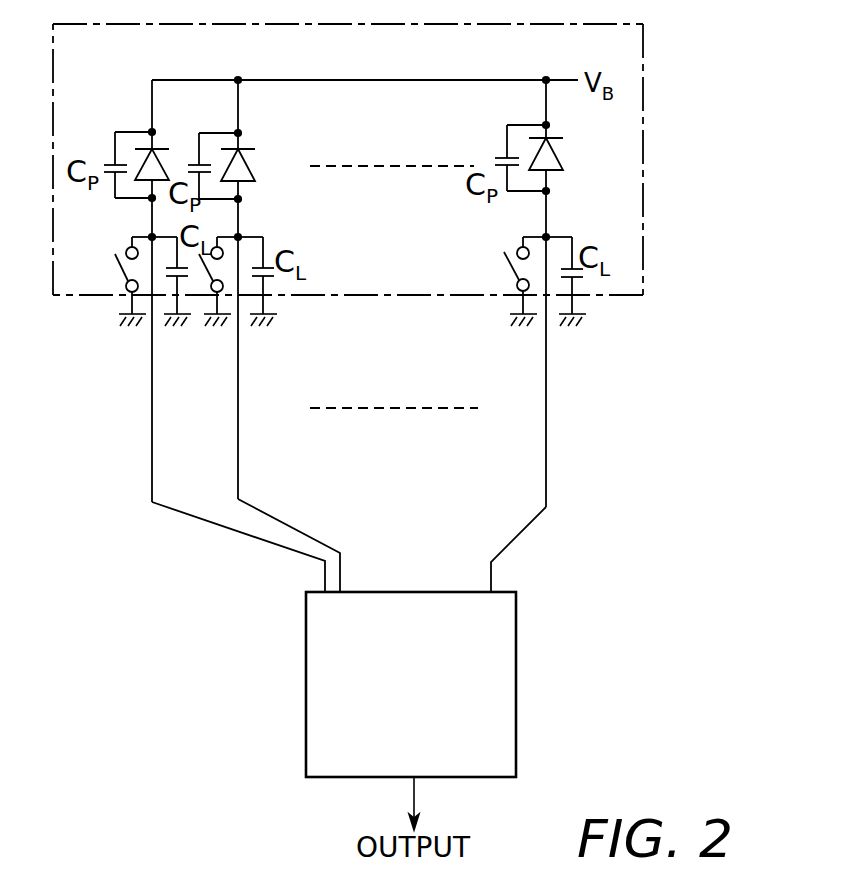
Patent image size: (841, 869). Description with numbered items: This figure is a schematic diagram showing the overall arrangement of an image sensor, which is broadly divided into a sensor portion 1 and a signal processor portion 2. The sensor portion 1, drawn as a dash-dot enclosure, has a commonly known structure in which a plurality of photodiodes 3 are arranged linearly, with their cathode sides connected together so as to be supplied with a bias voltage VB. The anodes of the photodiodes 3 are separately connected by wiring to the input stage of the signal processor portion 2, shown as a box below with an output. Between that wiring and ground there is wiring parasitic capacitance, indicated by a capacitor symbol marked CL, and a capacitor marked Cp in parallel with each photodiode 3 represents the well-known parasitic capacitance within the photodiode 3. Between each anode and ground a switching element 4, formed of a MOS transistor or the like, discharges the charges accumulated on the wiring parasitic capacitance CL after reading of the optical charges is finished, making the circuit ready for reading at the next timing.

The sensor portion 1 is at (420, 57).
The signal processor portion 2 is at (517, 690).
The photodiode 3 is at (139, 164).
The switching element 4 is at (117, 268).